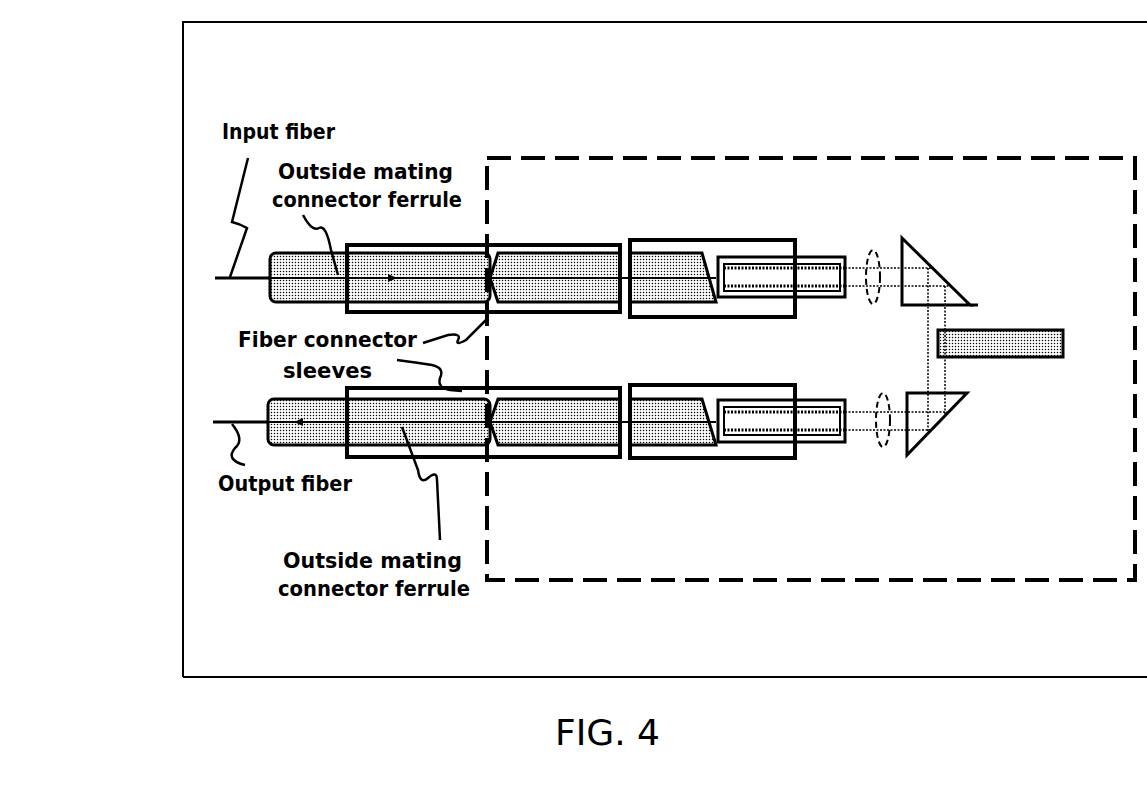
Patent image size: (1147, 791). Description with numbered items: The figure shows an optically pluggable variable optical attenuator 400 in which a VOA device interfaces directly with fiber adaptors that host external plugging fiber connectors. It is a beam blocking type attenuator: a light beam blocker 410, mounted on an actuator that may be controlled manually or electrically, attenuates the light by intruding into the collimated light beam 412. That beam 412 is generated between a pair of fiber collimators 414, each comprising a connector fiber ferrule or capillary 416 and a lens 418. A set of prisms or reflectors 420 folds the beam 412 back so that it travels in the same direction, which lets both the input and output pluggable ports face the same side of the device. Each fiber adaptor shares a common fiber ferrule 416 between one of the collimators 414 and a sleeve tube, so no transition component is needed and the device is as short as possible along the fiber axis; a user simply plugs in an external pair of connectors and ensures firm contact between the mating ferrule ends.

The optical connector assembly 400 is at (811, 332).
The light beam blocker 410 is at (977, 347).
The collimated light beam 412 is at (867, 257).
The fiber collimators 414 is at (808, 492).
The connector fiber ferrule 416 is at (545, 410).
The lens 418 is at (737, 400).
The prisms or reflectors 420 is at (918, 305).